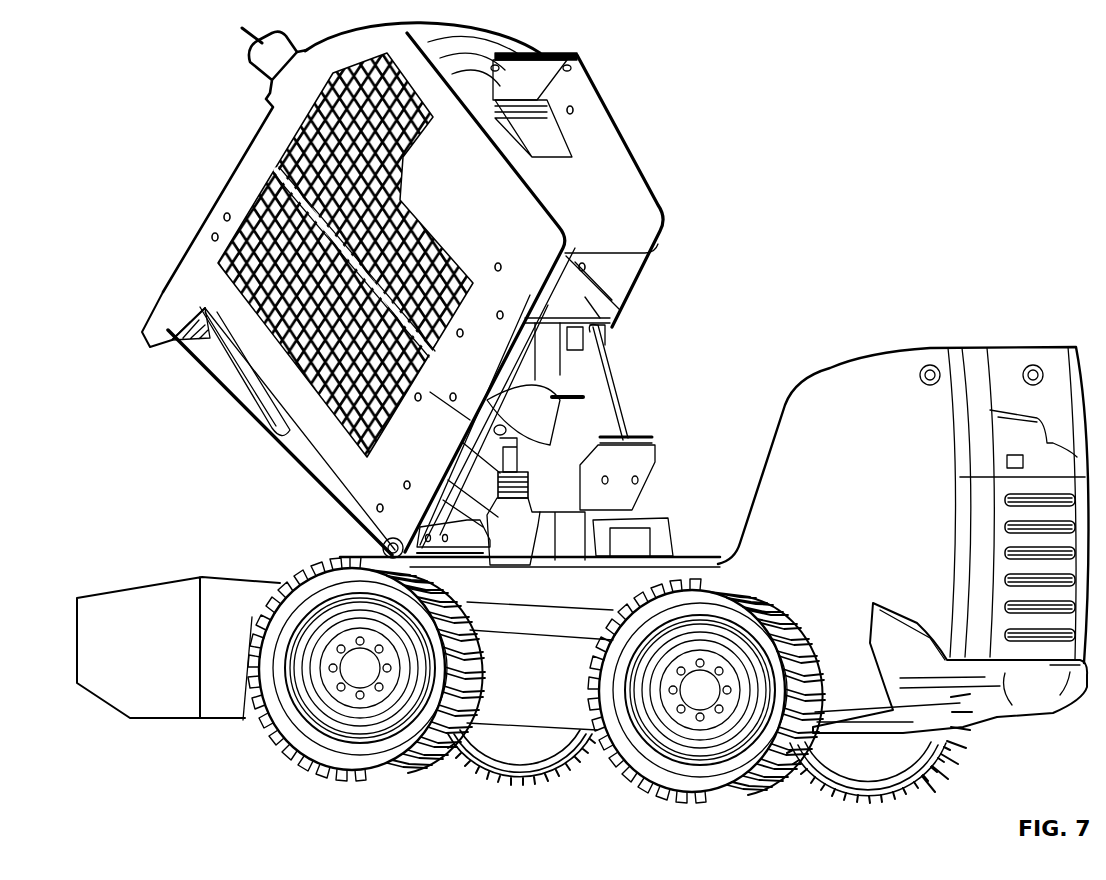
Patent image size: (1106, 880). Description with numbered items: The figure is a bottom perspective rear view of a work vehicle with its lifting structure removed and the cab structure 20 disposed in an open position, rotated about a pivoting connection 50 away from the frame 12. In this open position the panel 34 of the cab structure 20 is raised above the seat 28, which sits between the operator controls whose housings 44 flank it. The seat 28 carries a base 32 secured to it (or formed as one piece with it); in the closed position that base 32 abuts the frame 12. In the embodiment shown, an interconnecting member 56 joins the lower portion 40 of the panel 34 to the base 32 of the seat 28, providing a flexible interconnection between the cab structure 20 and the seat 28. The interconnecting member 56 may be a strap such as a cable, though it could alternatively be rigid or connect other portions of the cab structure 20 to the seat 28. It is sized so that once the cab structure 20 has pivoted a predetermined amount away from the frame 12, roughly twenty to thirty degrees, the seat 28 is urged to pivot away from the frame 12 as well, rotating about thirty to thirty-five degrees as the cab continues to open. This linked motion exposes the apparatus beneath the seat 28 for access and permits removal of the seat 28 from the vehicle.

The frame 12 is at (520, 707).
The cab structure 20 is at (330, 44).
The seat 28 is at (517, 403).
The base 32 is at (640, 434).
The panel 34 is at (585, 297).
The lower portion 40 is at (598, 332).
The housing 44 is at (656, 520).
The pivoting connection 50 is at (393, 547).
The interconnecting member 56 is at (612, 402).